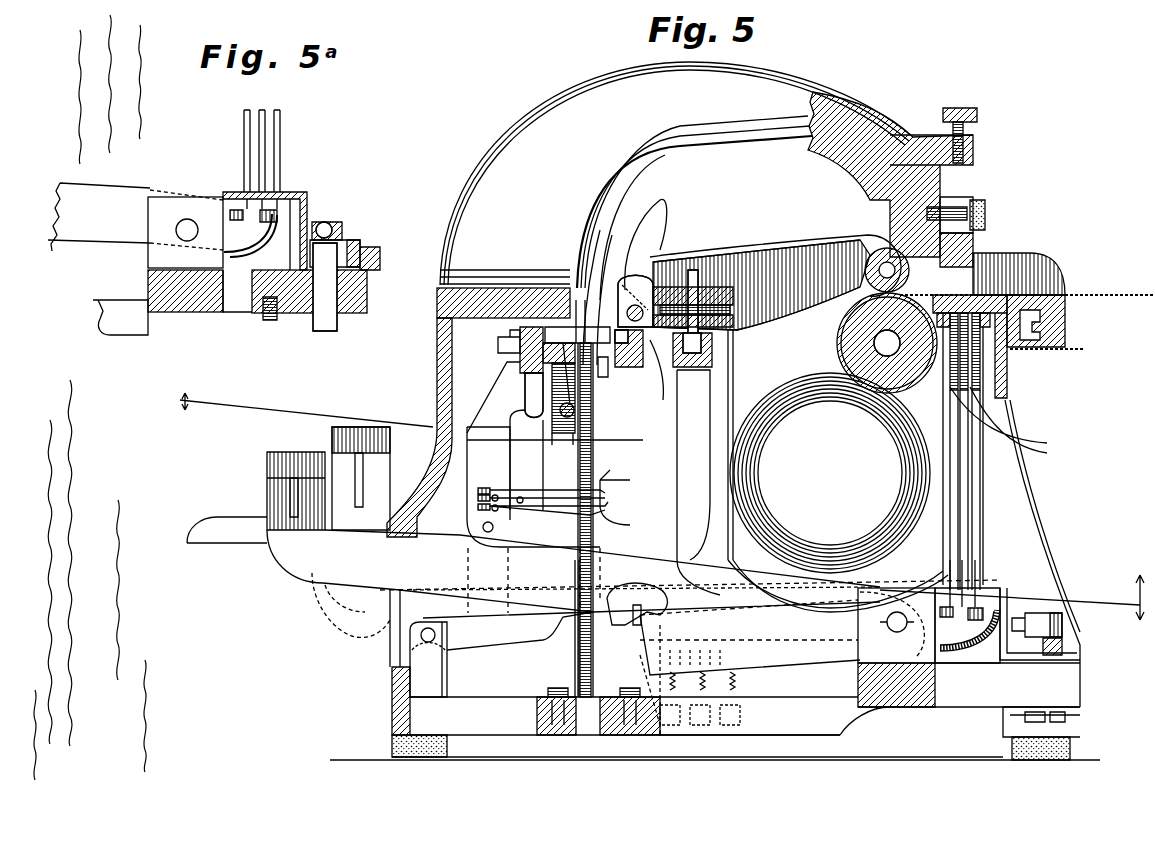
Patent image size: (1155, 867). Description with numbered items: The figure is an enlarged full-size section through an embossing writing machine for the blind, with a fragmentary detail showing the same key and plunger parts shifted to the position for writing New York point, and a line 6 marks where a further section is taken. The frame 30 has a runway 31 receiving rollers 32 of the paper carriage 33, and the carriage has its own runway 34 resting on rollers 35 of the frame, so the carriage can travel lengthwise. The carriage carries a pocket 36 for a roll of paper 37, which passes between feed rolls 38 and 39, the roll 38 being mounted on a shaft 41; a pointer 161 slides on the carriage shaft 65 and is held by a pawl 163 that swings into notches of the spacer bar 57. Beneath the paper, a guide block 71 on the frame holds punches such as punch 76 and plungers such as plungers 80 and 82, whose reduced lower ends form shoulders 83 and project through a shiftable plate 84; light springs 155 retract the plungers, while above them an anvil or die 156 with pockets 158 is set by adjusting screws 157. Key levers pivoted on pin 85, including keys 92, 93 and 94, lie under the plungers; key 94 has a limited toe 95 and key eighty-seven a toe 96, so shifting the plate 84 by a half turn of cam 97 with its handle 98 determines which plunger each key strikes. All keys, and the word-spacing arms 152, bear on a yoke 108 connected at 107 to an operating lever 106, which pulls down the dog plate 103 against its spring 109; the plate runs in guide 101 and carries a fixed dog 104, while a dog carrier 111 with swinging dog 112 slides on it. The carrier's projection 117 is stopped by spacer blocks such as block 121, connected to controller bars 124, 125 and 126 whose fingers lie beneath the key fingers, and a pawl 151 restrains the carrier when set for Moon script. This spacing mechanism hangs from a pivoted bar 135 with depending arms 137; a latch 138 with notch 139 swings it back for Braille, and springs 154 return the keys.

In FIG. 5, the section line 6 is at (298, 409).
In FIG. 5, the frame 30 is at (437, 345).
In FIG. 5, the runway 31 is at (685, 360).
In FIG. 5, the rollers 32 is at (695, 268).
In FIG. 5, the paper carriage 33 is at (735, 268).
In FIG. 5, the runway 34 is at (1020, 270).
In FIG. 5, the rollers 35 is at (1045, 328).
In FIG. 5, the pocket 36 is at (740, 395).
In FIG. 5, the roll of paper 37 is at (810, 380).
In FIG. 5, the feed roll 38 is at (840, 326).
In FIG. 5, the feed roll 39 is at (870, 258).
In FIG. 5, the shaft 41 is at (872, 343).
In FIG. 5, the spacer bar 57 is at (630, 368).
In FIG. 5, the shaft of the paper carriage 65 is at (653, 370).
In FIG. 5, the guide block 71 is at (1005, 360).
In FIG. 5A, the punch 76 is at (283, 150).
In FIG. 5, the punch 76 is at (980, 515).
In FIG. 5A, the plunger 80 is at (252, 112).
In FIG. 5, the plunger 80 is at (986, 540).
In FIG. 5A, the plunger 82 is at (242, 127).
In FIG. 5, the plunger 82 is at (947, 572).
In FIG. 5A, the shoulders 83 is at (280, 190).
In FIG. 5, the shoulders 83 is at (965, 585).
In FIG. 5A, the plate 84 is at (303, 200).
In FIG. 5, the plate 84 is at (1003, 590).
In FIG. 5A, the pivot pin 85 is at (186, 220).
In FIG. 5, the pivot pin 85 is at (887, 622).
In FIG. 5, the key lever 92 is at (612, 495).
In FIG. 5, the key lever 93 is at (355, 435).
In FIG. 5A, the key lever 94 is at (99, 217).
In FIG. 5, the key lever 94 is at (280, 462).
In FIG. 5A, the plunger-engaging toe 95 is at (250, 222).
In FIG. 5, the plunger-engaging toe 95 is at (965, 620).
In FIG. 5A, the toe 96 is at (335, 222).
In FIG. 5A, the cam 97 is at (355, 240).
In FIG. 5, the cam 97 is at (1062, 648).
In FIG. 5, the operating handle 98 is at (1062, 624).
In FIG. 5, the guide 101 is at (570, 310).
In FIG. 5, the dog plate 103 is at (592, 405).
In FIG. 5, the fixed dog 104 is at (602, 297).
In FIG. 5, the operating lever 106 is at (530, 637).
In FIG. 5, the connection 107 is at (630, 625).
In FIG. 5, the yoke 108 is at (750, 667).
In FIG. 5, the spring 109 is at (578, 657).
In FIG. 5, the dog carrier 111 is at (594, 430).
In FIG. 5, the swinging dog 112 is at (604, 378).
In FIG. 5, the projection 117 is at (540, 333).
In FIG. 5, the spacer block 121 is at (525, 460).
In FIG. 5, the controller bar 124 is at (478, 508).
In FIG. 5, the controller bar 125 is at (478, 498).
In FIG. 5, the controller bar 126 is at (478, 490).
In FIG. 5, the bar 135 is at (497, 370).
In FIG. 5, the depending arms 137 is at (478, 447).
In FIG. 5, the latch 138 is at (315, 635).
In FIG. 5, the notch 139 is at (390, 612).
In FIG. 5, the pawl 151 is at (498, 347).
In FIG. 5, the arms 152 is at (262, 545).
In FIG. 5, the springs 154 is at (740, 678).
In FIG. 5, the light springs 155 is at (1009, 451).
In FIG. 5, the anvil or die 156 is at (975, 215).
In FIG. 5, the adjusting screws 157 is at (978, 112).
In FIG. 5, the pockets or depressions 158 is at (975, 255).
In FIG. 5, the pointer 161 is at (780, 235).
In FIG. 5, the pawl 163 is at (655, 215).